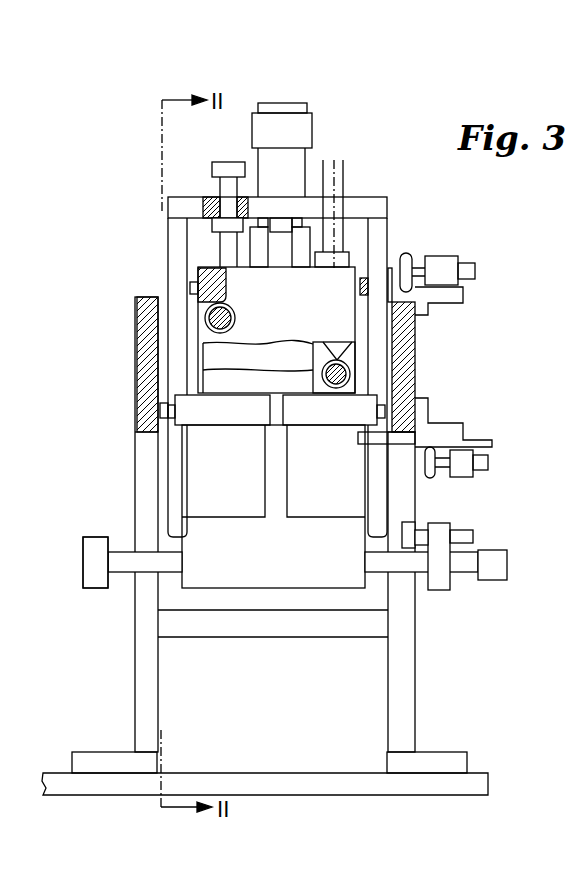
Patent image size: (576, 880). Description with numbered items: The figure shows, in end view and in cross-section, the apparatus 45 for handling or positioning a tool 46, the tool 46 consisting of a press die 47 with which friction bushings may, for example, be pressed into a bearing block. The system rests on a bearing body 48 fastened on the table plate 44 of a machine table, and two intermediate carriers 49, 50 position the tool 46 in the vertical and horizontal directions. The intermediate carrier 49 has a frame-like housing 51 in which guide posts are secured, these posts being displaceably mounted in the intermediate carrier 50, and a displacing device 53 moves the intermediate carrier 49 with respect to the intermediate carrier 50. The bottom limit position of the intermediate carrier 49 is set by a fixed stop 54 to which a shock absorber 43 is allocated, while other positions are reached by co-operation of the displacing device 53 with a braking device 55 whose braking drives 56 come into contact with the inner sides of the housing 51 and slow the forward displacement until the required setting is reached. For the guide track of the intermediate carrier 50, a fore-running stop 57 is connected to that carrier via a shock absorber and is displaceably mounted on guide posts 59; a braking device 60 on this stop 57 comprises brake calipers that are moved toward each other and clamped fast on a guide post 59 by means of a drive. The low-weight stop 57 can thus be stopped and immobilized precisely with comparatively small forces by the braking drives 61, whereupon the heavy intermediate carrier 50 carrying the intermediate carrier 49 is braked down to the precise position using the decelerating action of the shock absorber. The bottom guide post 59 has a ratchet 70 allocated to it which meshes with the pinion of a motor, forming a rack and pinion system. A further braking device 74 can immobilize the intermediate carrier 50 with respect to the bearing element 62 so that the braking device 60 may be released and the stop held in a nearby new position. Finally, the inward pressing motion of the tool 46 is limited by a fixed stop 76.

The shock absorber 43 is at (332, 188).
The table plate 44 is at (481, 787).
The apparatus 45 is at (431, 115).
The tool 46 is at (96, 582).
The press die 47 is at (96, 544).
The bearing body 48 is at (462, 510).
The intermediate carrier 49 is at (205, 496).
The intermediate carrier 50 is at (198, 329).
The frame-like housing 51 is at (358, 212).
The displacing device 53 is at (305, 126).
The fixed stop 54 is at (228, 168).
The braking device 55 is at (206, 255).
The braking drives 56 is at (212, 283).
The stop 57 is at (213, 353).
The guide posts 59 is at (350, 374).
The braking device 60 is at (372, 356).
The braking drives 61 is at (332, 341).
The bearing element 62 is at (405, 634).
The ratchet 70 is at (212, 373).
The braking device 74 is at (200, 431).
The fixed stop 76 is at (420, 530).